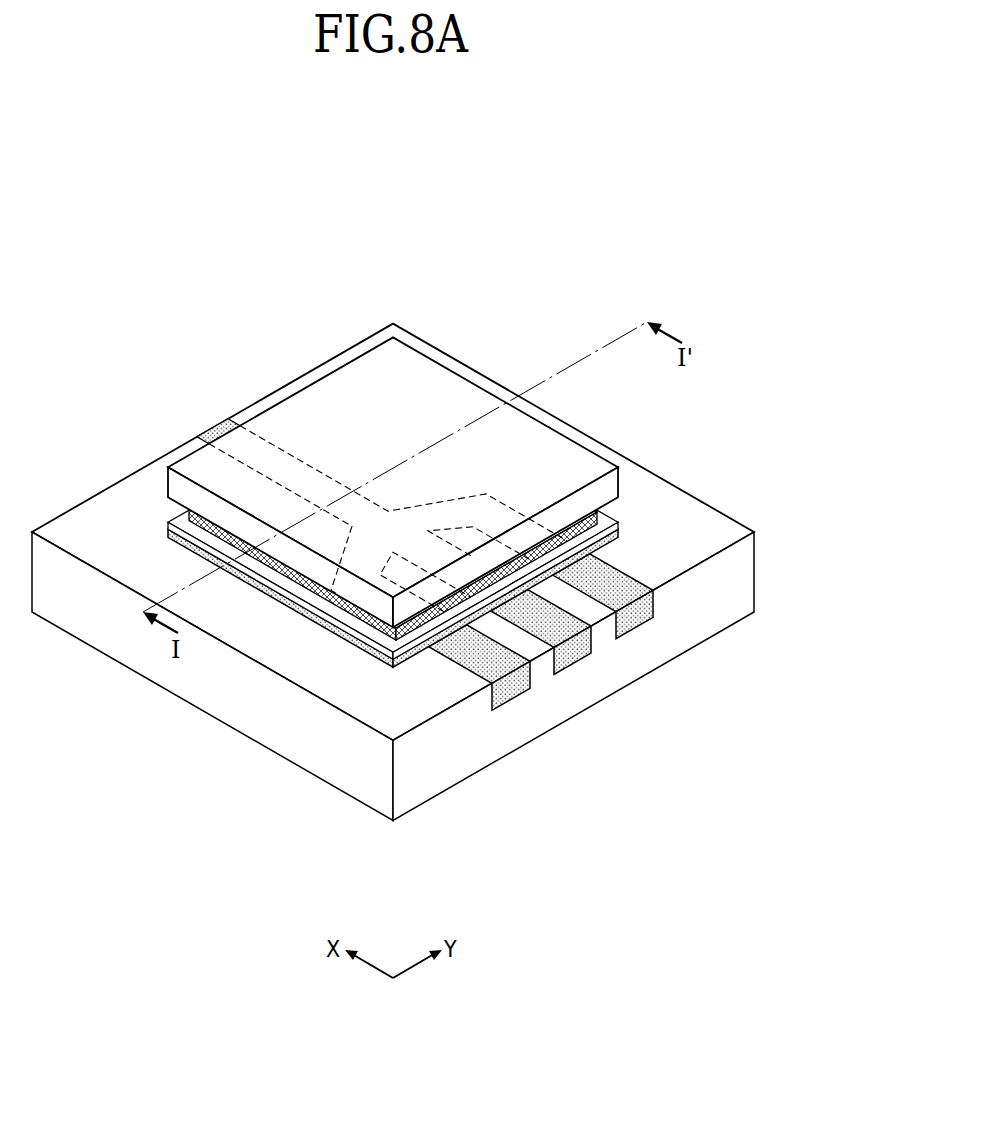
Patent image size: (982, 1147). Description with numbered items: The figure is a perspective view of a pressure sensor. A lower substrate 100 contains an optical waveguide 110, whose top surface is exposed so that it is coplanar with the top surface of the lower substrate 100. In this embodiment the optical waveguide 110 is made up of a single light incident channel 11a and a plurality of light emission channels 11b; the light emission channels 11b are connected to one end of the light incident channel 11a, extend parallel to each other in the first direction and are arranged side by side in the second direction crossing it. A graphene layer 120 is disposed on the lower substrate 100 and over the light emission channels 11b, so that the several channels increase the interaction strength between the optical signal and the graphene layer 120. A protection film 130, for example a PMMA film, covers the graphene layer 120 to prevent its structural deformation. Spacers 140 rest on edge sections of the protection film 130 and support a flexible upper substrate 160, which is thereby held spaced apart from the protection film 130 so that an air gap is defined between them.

The lower substrate 100 is at (742, 579).
The optical waveguide 110 is at (599, 667).
The light incident channel 11a is at (218, 429).
The light emission channels 11b is at (769, 690).
The graphene layer 120 is at (619, 534).
The protection film 130 is at (618, 524).
The spacers 140 is at (614, 508).
The upper substrate 160 is at (422, 378).